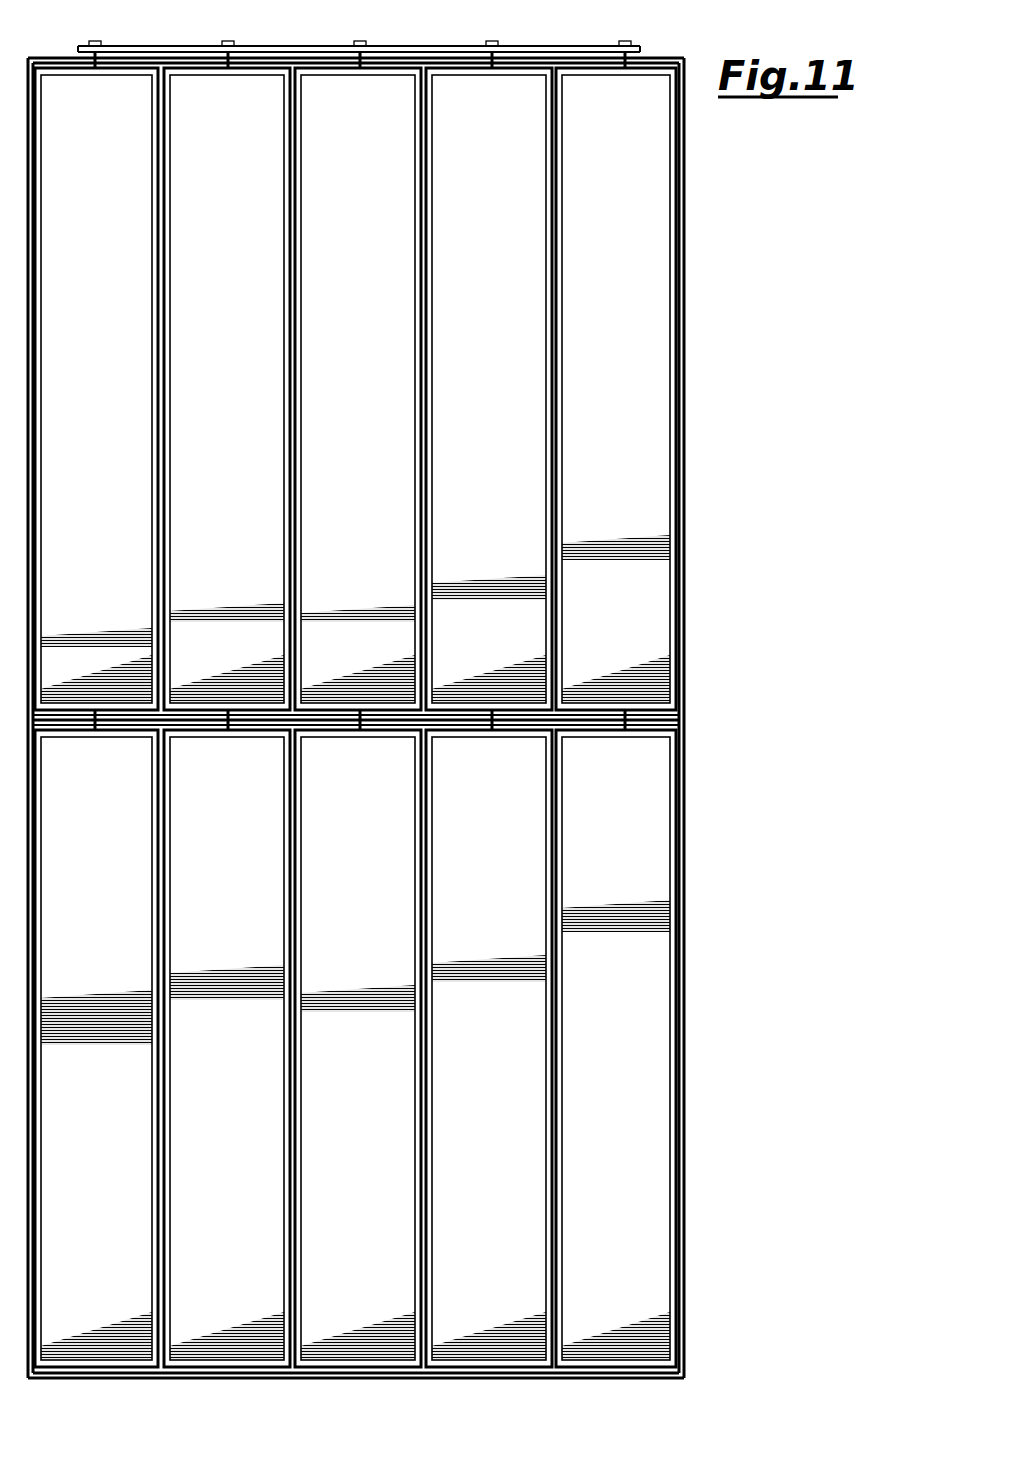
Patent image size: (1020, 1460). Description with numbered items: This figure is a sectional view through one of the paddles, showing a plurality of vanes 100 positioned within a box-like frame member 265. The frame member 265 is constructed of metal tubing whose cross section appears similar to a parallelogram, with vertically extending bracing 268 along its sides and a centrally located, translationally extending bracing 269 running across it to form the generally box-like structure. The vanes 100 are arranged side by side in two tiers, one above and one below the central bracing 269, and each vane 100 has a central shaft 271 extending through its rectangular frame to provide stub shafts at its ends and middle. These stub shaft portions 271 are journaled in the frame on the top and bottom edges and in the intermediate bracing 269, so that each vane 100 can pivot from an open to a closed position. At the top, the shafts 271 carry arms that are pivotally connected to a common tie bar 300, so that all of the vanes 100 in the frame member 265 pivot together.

The tie bar 300 is at (320, 46).
The central shaft 271 is at (642, 54).
The vane 100 is at (640, 466).
The vertically extending bracing 268 is at (684, 558).
The translationally extending bracing 269 is at (652, 727).
The box-like frame member 265 is at (622, 1372).